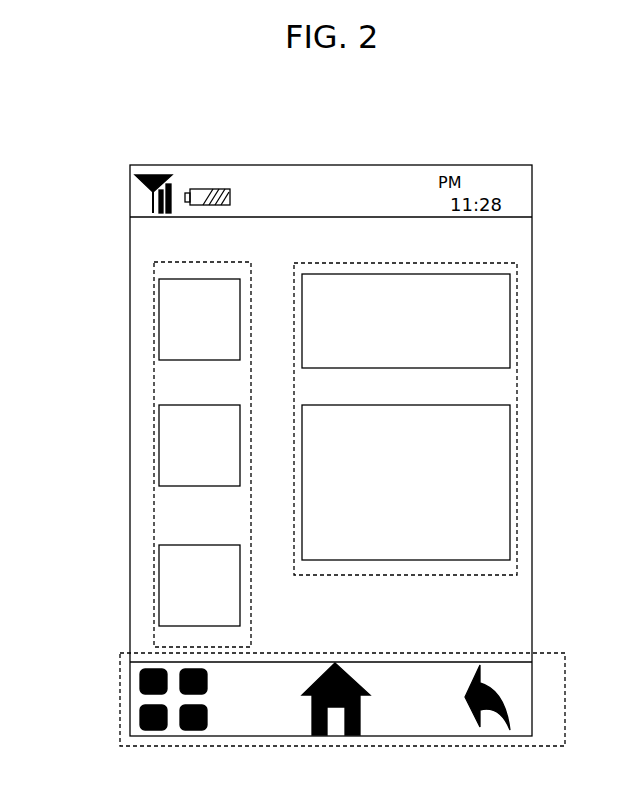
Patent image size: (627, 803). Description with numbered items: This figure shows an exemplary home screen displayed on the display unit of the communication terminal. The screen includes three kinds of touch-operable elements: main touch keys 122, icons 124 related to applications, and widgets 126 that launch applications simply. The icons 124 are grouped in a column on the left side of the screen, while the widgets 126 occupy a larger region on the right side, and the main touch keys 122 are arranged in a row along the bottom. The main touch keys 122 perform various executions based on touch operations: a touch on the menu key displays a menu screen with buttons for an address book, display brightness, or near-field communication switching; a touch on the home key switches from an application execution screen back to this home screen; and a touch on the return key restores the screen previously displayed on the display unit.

The main touch keys 122 is at (119, 660).
The icons 124 is at (153, 302).
The widgets 126 is at (516, 330).